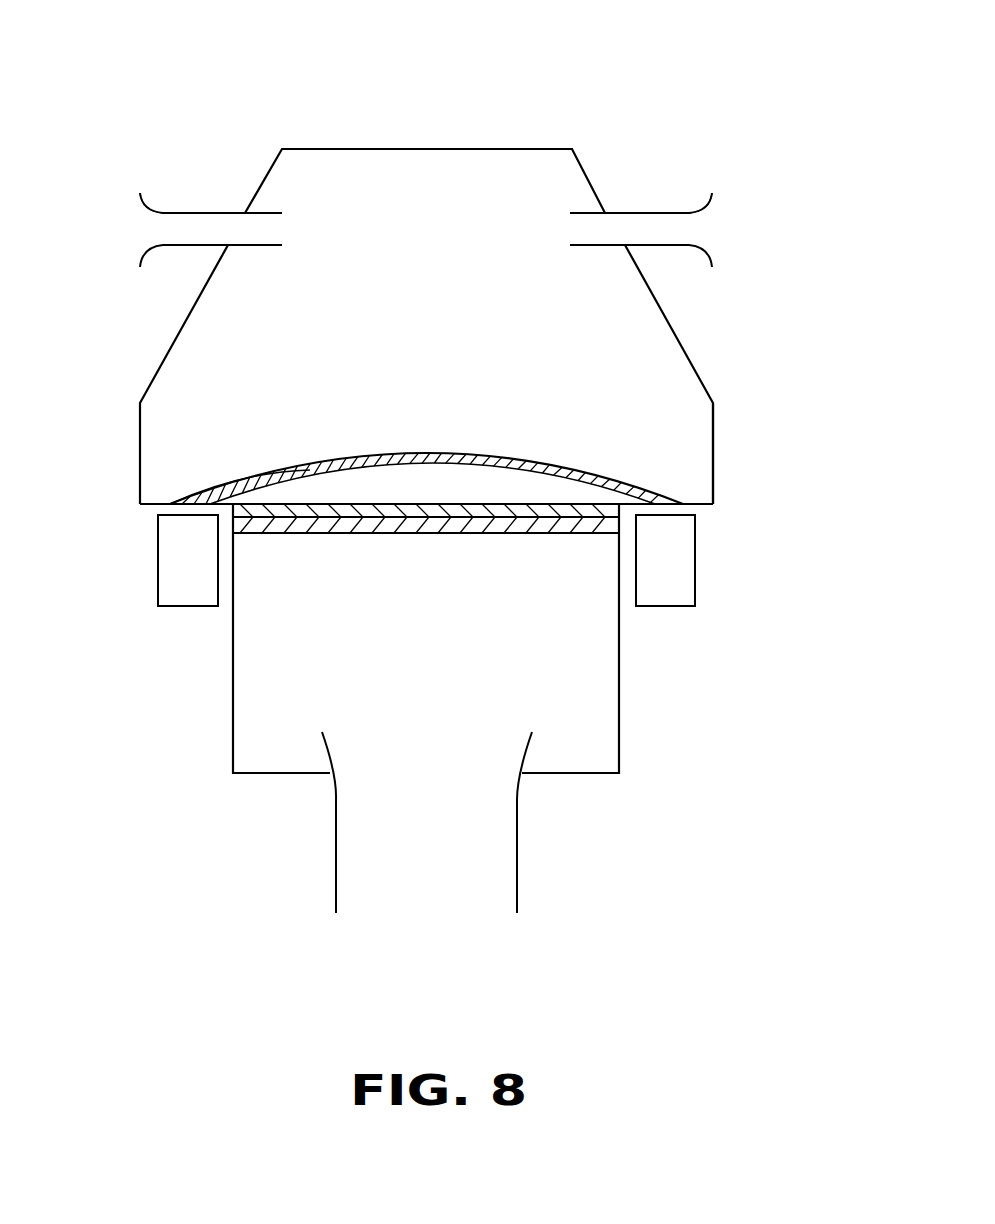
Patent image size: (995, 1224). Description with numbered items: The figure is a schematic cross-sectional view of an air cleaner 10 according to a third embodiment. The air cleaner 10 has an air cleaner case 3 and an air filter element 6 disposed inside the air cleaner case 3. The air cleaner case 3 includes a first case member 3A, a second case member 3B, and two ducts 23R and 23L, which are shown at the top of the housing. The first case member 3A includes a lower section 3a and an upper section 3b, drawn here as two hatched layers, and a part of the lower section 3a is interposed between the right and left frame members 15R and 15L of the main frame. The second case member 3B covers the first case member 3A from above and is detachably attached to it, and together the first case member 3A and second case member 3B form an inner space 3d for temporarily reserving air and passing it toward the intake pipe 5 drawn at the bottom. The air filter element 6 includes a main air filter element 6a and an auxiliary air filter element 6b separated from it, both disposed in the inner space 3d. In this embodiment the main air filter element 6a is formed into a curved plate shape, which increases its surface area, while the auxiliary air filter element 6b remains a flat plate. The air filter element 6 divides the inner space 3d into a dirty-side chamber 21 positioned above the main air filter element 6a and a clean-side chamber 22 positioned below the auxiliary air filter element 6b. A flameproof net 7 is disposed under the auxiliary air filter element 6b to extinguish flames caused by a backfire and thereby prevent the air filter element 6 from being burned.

The air cleaner 10 is at (565, 95).
The dirty-side chamber 21 is at (658, 332).
The duct 23L is at (196, 213).
The duct 23R is at (656, 213).
The air filter element 6 is at (354, 466).
The main air filter element 6a is at (297, 464).
The auxiliary air filter element 6b is at (267, 502).
The air cleaner case 3 is at (561, 528).
The first case member 3A is at (539, 577).
The lower section 3a is at (620, 653).
The upper section 3b is at (705, 507).
The second case member 3B is at (715, 442).
The inner space 3d is at (428, 600).
The left frame member 15L is at (157, 572).
The right frame member 15R is at (635, 573).
The flameproof net 7 is at (297, 535).
The clean-side chamber 22 is at (600, 707).
The intake pipe 5 is at (517, 858).